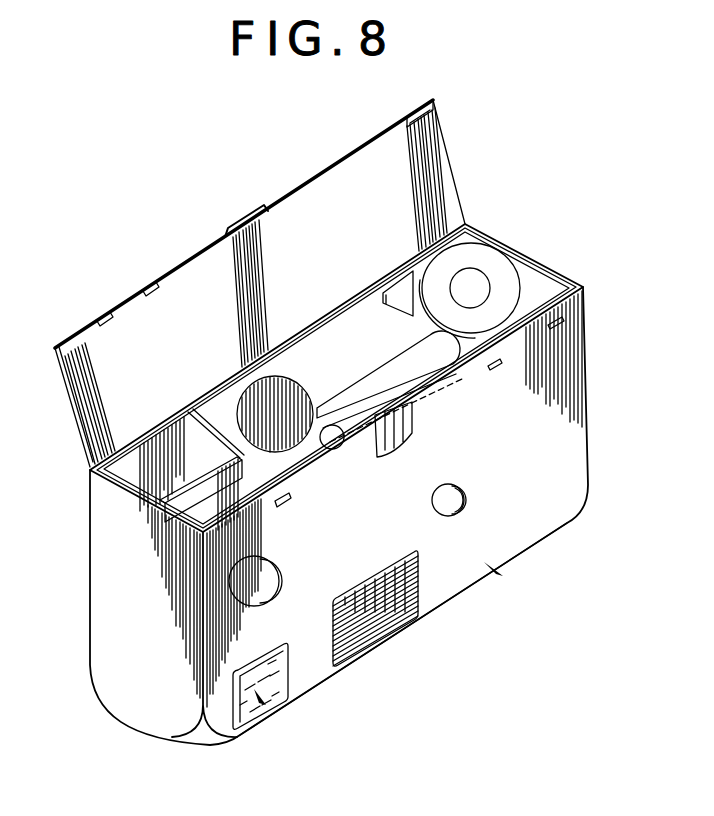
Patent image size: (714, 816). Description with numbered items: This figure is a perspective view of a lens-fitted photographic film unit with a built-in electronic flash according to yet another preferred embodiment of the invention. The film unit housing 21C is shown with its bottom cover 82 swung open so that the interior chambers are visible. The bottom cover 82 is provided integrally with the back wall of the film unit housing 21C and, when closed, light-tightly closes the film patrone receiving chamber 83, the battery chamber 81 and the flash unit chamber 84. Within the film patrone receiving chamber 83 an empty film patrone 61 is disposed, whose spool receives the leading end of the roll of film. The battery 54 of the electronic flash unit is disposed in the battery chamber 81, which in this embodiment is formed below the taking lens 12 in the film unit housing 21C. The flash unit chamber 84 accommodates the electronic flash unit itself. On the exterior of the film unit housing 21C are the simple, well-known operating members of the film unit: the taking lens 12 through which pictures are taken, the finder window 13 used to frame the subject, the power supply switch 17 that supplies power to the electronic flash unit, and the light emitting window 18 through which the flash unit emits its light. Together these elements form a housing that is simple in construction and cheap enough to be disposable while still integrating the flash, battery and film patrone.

The bottom cover 82 is at (448, 180).
The film patrone receiving chamber 83 is at (397, 292).
The film patrone 61 is at (498, 275).
The flash unit chamber 84 is at (120, 470).
The battery 54 is at (413, 377).
The battery chamber 81 is at (337, 403).
The taking lens 12 is at (462, 513).
The power supply switch 17 is at (257, 583).
The finder window 13 is at (378, 627).
The light emitting window 18 is at (272, 710).
The film unit housing 21C is at (497, 572).